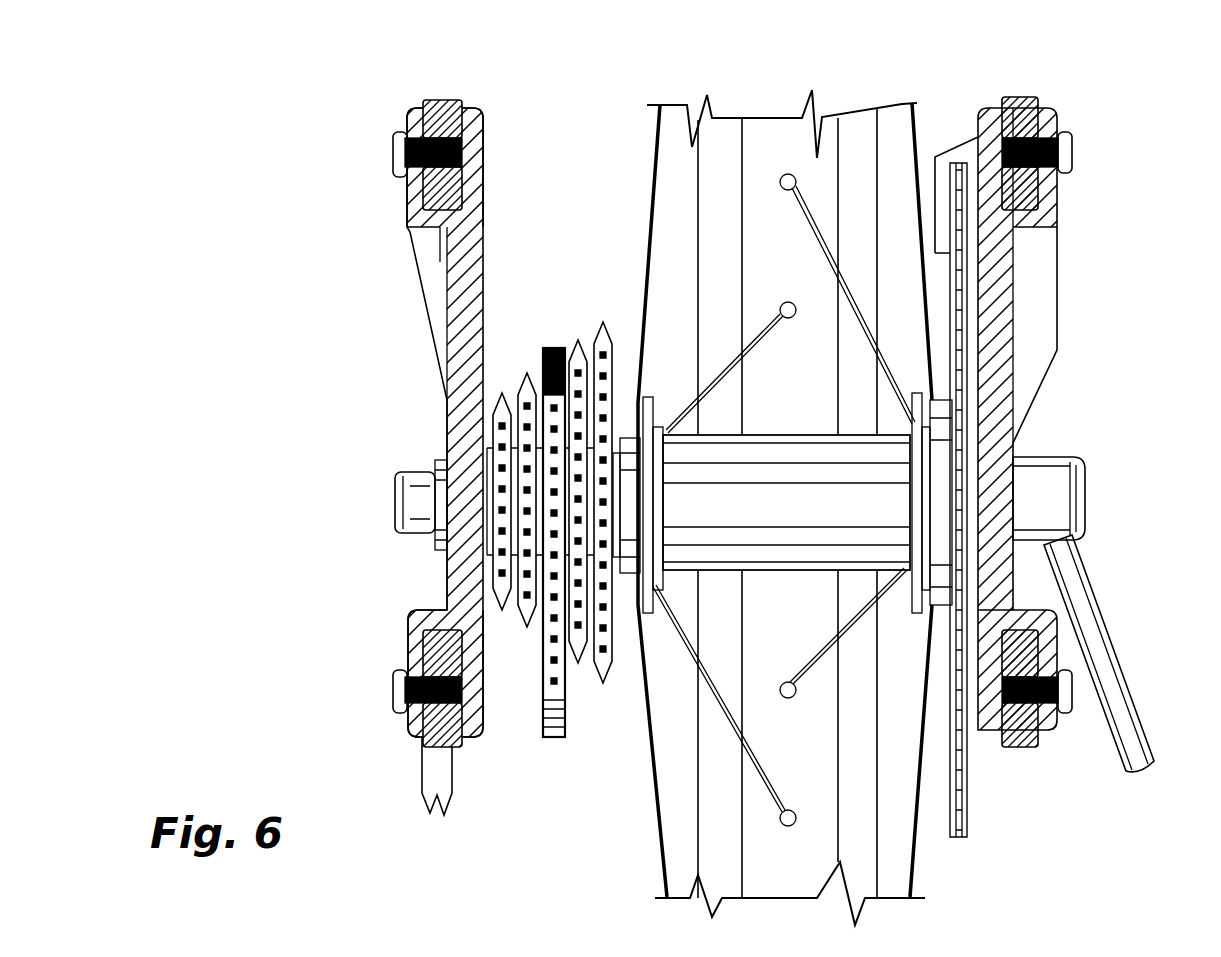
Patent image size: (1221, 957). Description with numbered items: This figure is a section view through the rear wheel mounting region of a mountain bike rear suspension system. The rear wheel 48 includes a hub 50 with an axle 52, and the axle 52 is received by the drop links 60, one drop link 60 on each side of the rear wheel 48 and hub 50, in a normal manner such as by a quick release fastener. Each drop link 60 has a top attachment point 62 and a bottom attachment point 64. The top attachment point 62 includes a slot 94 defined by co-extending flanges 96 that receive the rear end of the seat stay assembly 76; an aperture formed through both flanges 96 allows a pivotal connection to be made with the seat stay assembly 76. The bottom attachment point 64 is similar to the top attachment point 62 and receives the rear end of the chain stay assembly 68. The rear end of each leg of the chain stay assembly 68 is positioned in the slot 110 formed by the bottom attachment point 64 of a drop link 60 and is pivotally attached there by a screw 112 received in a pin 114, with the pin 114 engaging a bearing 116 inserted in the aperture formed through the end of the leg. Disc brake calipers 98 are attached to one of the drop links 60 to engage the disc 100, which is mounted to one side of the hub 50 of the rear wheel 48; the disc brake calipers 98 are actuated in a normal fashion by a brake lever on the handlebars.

The rear wheel 48 is at (917, 865).
The hub 50 is at (772, 478).
The axle 52 is at (392, 502).
The drop link 60 is at (447, 397).
The top attachment point 62 is at (405, 132).
The bottom attachment point 64 is at (410, 712).
The chain stay assembly 68 is at (440, 747).
The seat stay assembly 76 is at (430, 100).
The slot 94 is at (470, 107).
The flanges 96 is at (412, 118).
The disc brake calipers 98 is at (958, 160).
The disc 100 is at (962, 292).
The slot 110 is at (435, 610).
The screw 112 is at (400, 690).
The pin 114 is at (483, 712).
The bearing 116 is at (430, 633).